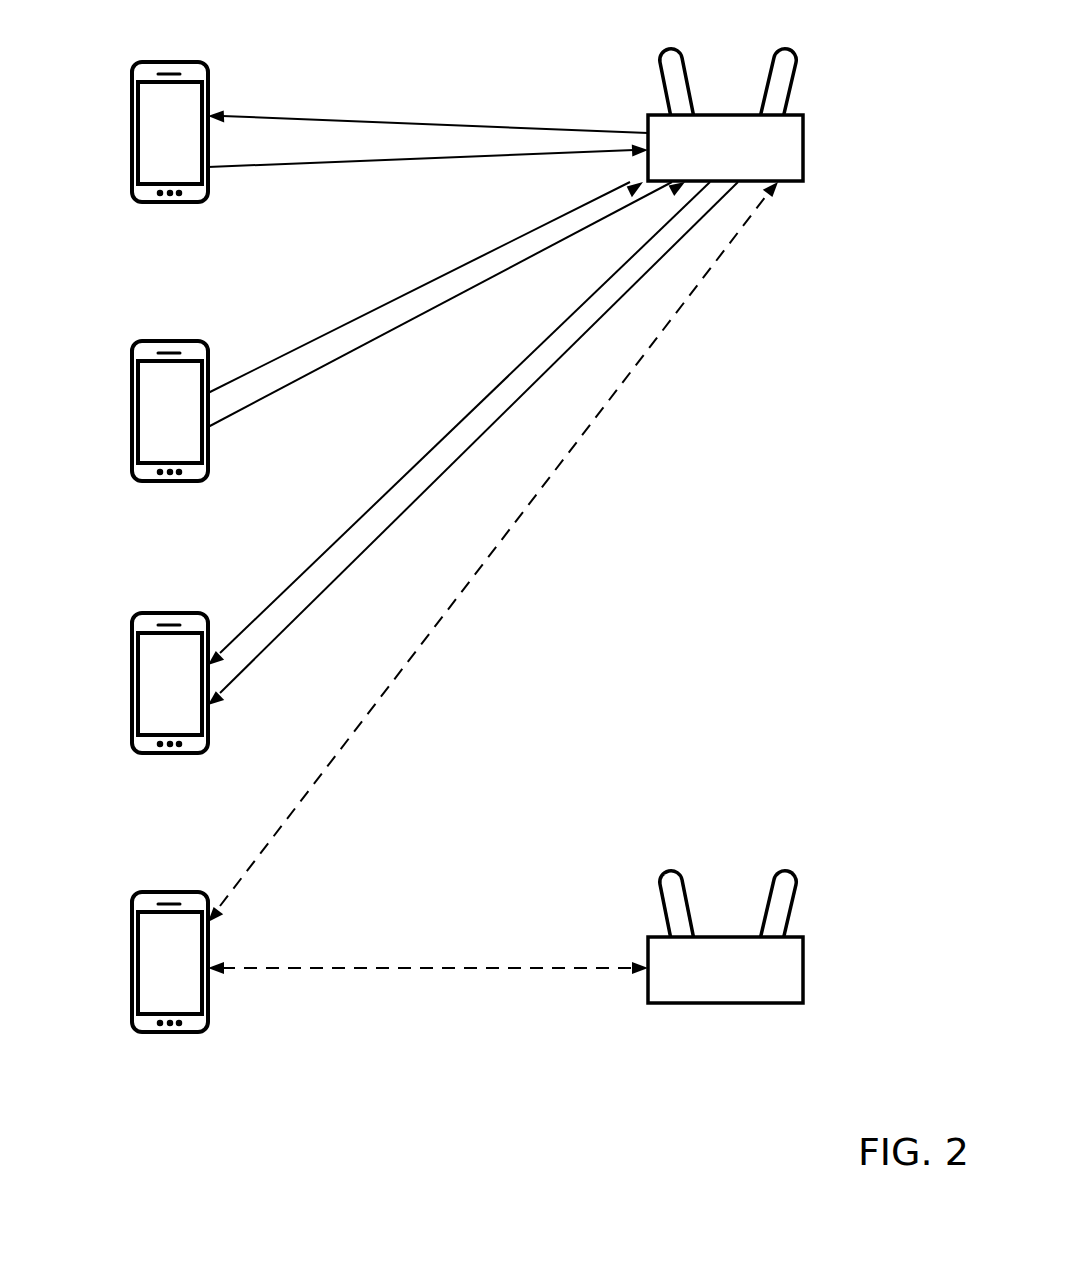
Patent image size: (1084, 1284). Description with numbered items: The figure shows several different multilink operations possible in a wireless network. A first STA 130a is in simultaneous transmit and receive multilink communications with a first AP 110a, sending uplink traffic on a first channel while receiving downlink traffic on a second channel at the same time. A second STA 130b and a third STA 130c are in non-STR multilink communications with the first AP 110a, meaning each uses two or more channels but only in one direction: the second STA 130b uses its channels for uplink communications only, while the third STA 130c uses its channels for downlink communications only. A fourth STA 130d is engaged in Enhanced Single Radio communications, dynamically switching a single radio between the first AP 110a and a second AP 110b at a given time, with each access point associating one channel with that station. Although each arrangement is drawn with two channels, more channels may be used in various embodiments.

The first STA 130a is at (208, 80).
The second STA 130b is at (208, 358).
The third STA 130c is at (132, 637).
The fourth STA 130d is at (132, 914).
The first AP 110a is at (690, 70).
The second AP 110b is at (690, 890).